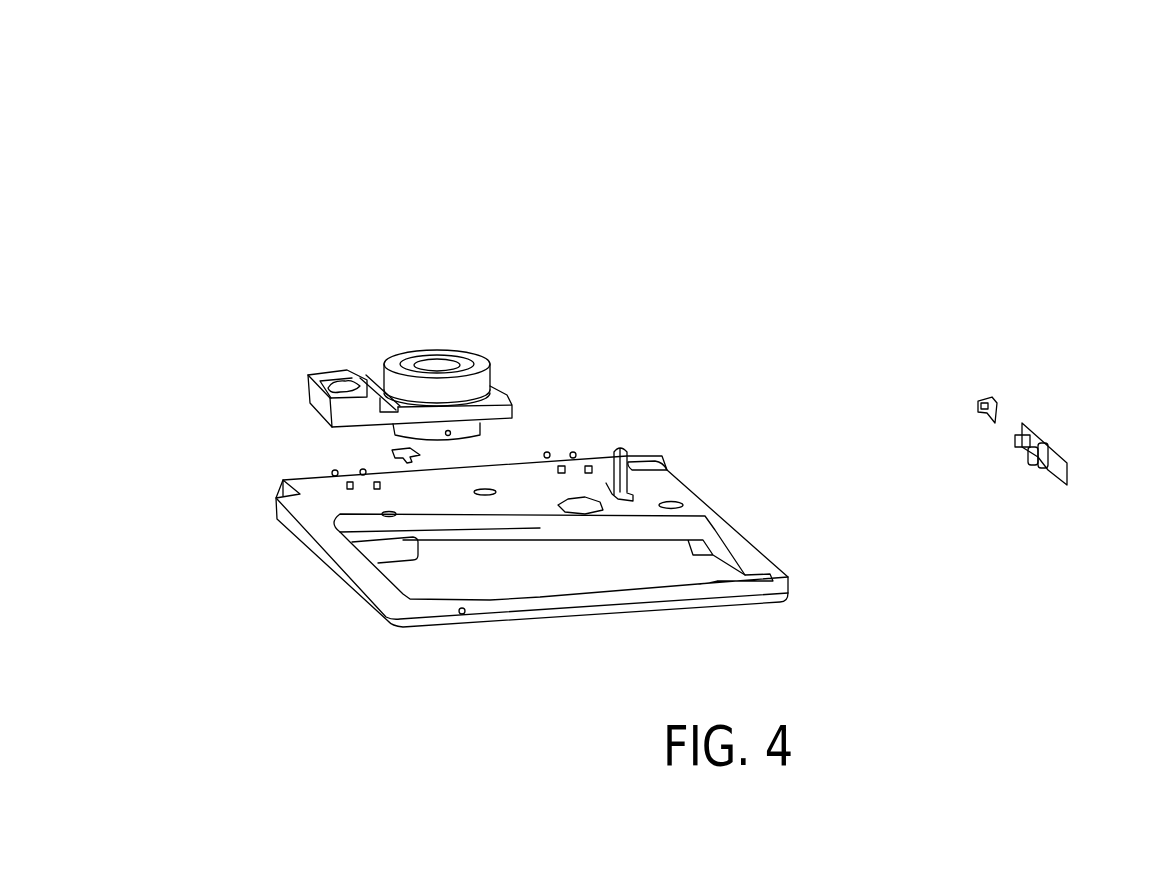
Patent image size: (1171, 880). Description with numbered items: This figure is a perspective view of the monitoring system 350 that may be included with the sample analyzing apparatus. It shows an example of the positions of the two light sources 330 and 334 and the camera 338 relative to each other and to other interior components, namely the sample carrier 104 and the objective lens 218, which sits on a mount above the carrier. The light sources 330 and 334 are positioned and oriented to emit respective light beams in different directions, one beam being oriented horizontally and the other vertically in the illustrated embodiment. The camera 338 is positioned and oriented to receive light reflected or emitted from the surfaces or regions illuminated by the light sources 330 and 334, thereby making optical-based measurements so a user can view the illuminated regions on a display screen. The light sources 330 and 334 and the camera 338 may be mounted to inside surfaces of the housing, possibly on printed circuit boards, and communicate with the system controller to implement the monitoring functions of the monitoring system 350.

The sample carrier 104 is at (703, 501).
The objective lens 218 is at (438, 363).
The light source 330 is at (985, 398).
The light source 334 is at (398, 455).
The camera 338 is at (1045, 443).
The monitoring system 350 is at (875, 210).